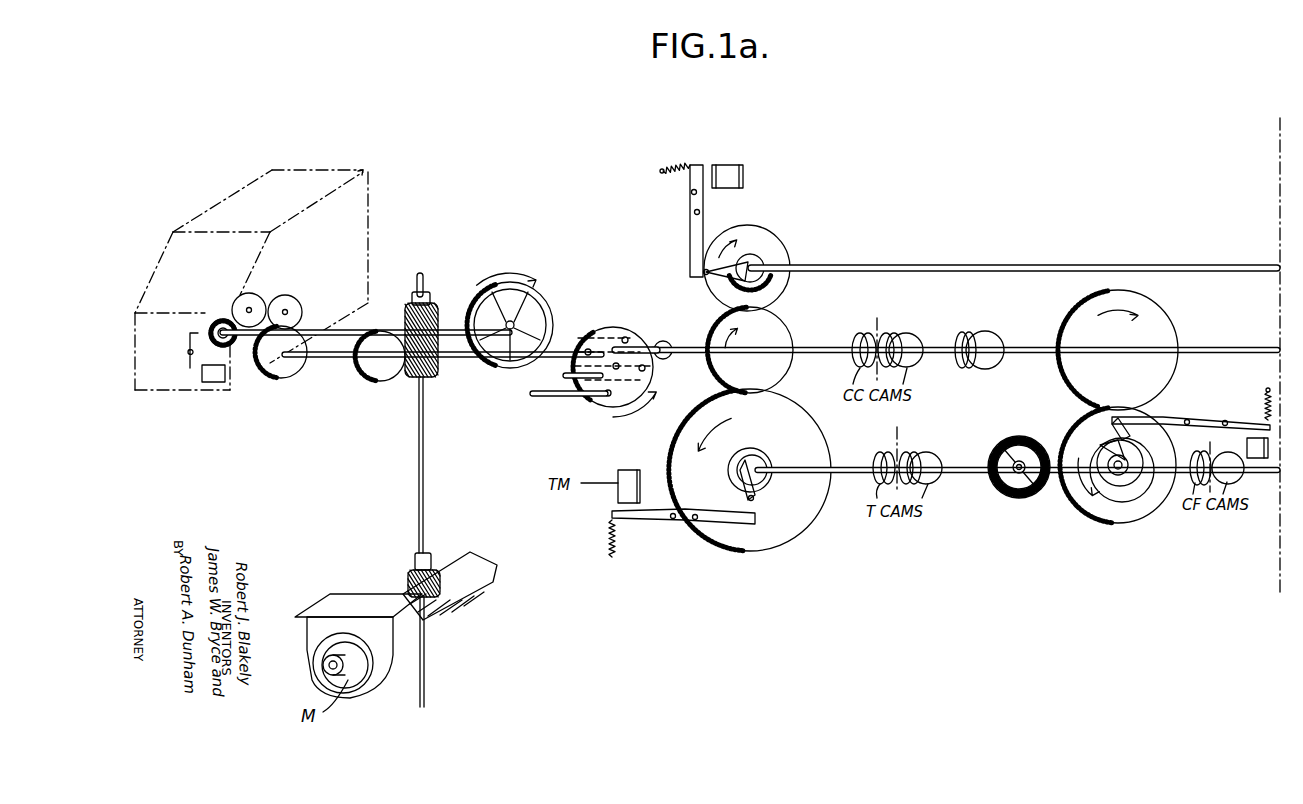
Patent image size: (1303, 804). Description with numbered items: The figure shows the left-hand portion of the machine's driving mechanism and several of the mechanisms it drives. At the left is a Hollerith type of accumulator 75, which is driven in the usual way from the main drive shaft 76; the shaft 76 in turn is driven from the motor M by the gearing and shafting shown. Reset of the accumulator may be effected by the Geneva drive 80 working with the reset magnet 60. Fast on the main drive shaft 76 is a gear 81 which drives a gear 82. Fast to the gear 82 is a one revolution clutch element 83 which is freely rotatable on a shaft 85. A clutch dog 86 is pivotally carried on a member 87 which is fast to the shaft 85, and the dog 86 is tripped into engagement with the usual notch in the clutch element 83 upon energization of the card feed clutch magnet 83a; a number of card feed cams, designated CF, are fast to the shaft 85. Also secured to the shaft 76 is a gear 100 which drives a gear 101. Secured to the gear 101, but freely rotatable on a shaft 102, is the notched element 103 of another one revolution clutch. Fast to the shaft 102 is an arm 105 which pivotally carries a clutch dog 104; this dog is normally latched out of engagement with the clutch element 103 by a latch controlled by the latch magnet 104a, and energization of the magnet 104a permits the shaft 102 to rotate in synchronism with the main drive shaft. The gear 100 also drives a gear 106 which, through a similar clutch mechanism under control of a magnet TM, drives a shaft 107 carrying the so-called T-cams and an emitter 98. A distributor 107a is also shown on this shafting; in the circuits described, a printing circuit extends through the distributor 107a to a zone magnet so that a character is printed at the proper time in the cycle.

The accumulator 75 is at (360, 202).
The reset magnet 60 is at (213, 378).
The main drive shaft 76 is at (330, 353).
The Geneva drive 80 is at (603, 328).
The gear 100 is at (770, 329).
The gear 101 is at (777, 249).
The shaft 102 is at (875, 268).
The notched element 103 is at (768, 262).
The clutch dog 104 is at (712, 292).
The latch magnet 104a is at (732, 168).
The arm 105 is at (737, 263).
The gear 106 is at (807, 433).
The shaft 107 is at (843, 468).
The distributor 107a is at (969, 318).
The gear 81 is at (1157, 313).
The gear 82 is at (1143, 503).
The one revolution clutch element 83 is at (1123, 480).
The card feed clutch magnet 83a is at (1255, 437).
The shaft 85 is at (1160, 470).
The clutch dog 86 is at (1093, 443).
The member 87 is at (1132, 463).
The emitter 98 is at (1010, 450).